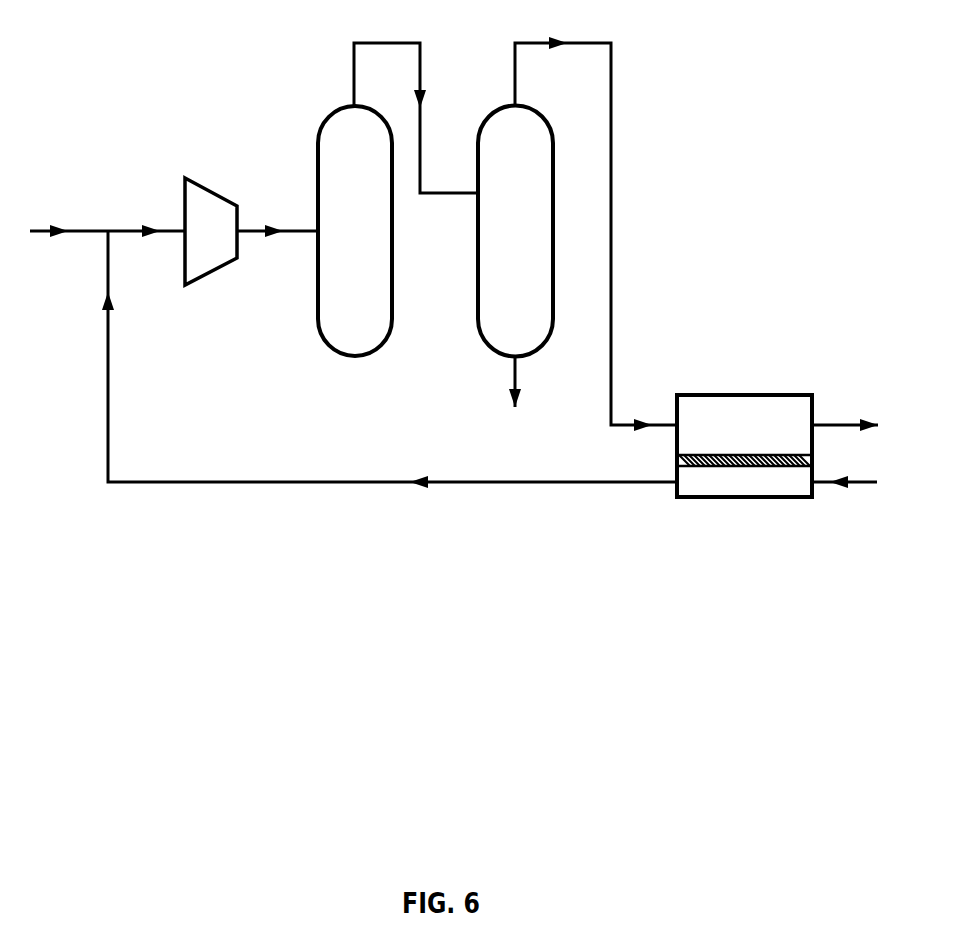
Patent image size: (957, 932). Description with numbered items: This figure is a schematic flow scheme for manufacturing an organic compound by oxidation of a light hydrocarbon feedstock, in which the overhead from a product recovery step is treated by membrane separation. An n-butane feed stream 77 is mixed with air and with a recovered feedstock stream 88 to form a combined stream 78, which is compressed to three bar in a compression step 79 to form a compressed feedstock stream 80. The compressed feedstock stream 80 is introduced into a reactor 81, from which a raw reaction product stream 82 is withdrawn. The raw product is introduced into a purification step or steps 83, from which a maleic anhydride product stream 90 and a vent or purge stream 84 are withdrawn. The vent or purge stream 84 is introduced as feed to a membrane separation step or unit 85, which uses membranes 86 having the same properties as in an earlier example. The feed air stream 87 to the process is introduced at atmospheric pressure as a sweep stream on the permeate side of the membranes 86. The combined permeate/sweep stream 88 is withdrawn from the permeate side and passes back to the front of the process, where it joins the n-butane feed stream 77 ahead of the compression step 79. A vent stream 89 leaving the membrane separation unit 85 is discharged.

The n-butane feed stream 77 is at (69, 215).
The combined feed stream 78 is at (146, 215).
The compression step 79 is at (210, 188).
The compressed feedstock stream 80 is at (277, 215).
The reactor 81 is at (318, 322).
The raw reaction product stream 82 is at (416, 118).
The purification step or steps 83 is at (479, 322).
The vent or purge stream 84 is at (596, 234).
The membrane separation step or unit 85 is at (725, 395).
The membranes 86 is at (737, 455).
The feed air stream 87 is at (861, 483).
The combined permeate/sweep stream 88 is at (389, 375).
The vent stream 89 is at (864, 426).
The maleic anhydride product stream 90 is at (530, 389).